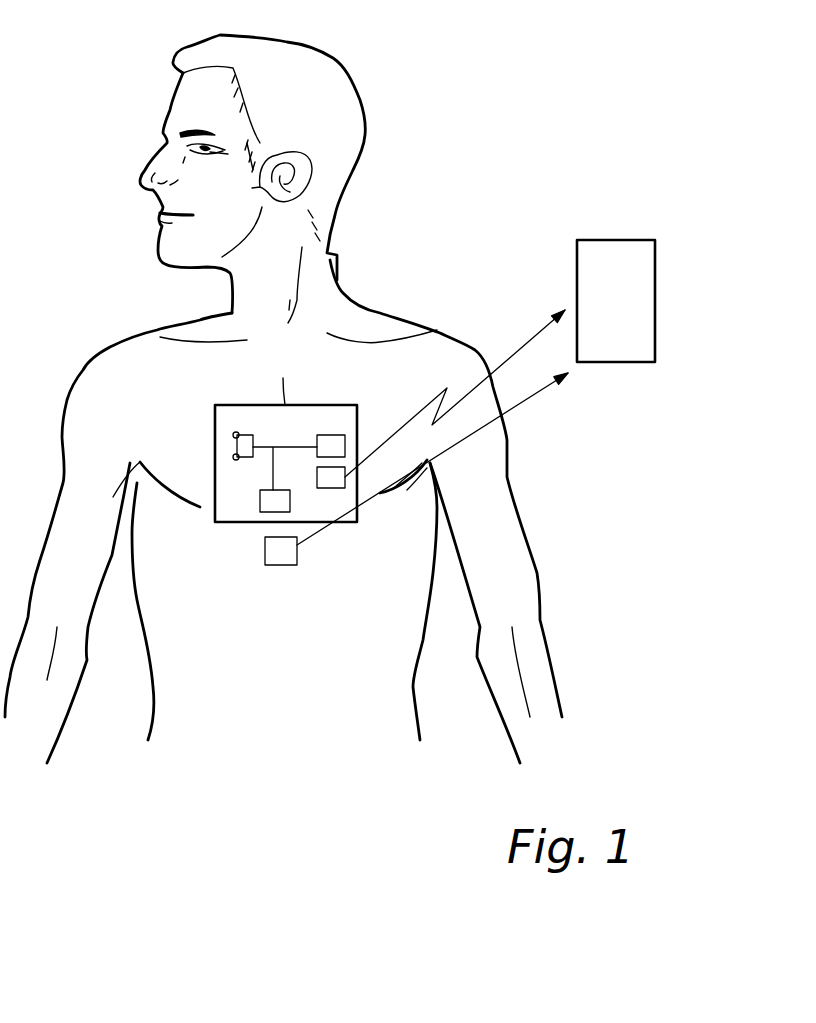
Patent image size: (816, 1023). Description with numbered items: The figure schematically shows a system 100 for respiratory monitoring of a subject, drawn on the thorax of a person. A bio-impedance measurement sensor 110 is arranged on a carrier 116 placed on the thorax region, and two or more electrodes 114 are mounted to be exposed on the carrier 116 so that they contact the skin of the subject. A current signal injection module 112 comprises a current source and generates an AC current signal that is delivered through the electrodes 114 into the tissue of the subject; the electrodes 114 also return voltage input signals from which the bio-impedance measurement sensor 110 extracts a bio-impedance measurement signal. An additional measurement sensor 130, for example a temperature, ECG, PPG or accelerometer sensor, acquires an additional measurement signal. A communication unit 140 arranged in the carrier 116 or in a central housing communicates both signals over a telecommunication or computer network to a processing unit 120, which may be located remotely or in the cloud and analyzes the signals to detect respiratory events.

The system for respiratory monitoring 100 is at (346, 399).
The bio-impedance measurement sensor 110 is at (253, 481).
The current signal injection module 112 is at (332, 435).
The electrodes 114 is at (233, 435).
The carrier 116 is at (220, 443).
The processing unit 120 is at (637, 362).
The additional measurement sensor 130 is at (277, 567).
The communication unit 140 is at (332, 488).